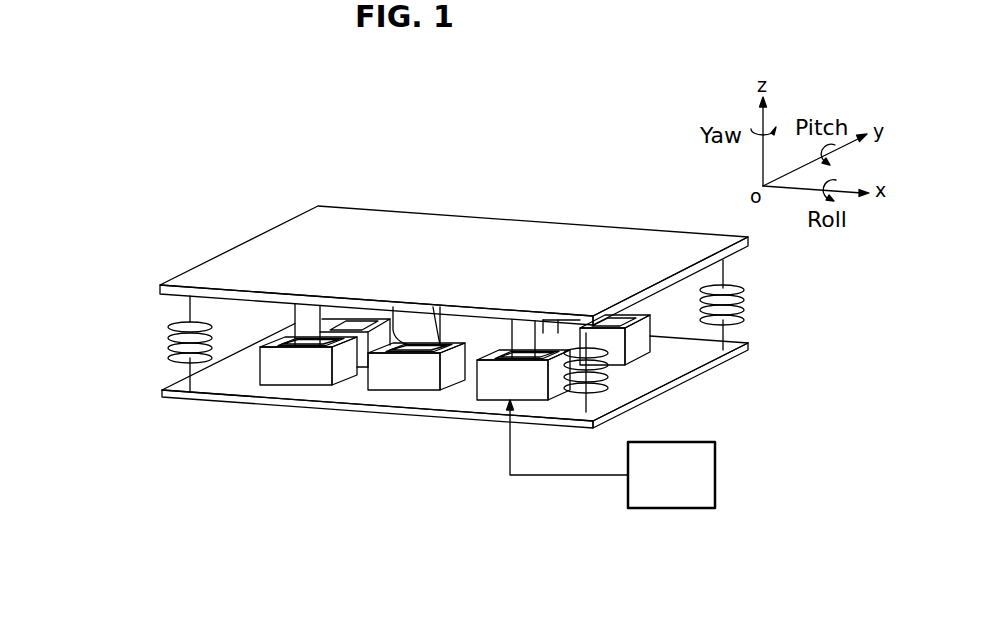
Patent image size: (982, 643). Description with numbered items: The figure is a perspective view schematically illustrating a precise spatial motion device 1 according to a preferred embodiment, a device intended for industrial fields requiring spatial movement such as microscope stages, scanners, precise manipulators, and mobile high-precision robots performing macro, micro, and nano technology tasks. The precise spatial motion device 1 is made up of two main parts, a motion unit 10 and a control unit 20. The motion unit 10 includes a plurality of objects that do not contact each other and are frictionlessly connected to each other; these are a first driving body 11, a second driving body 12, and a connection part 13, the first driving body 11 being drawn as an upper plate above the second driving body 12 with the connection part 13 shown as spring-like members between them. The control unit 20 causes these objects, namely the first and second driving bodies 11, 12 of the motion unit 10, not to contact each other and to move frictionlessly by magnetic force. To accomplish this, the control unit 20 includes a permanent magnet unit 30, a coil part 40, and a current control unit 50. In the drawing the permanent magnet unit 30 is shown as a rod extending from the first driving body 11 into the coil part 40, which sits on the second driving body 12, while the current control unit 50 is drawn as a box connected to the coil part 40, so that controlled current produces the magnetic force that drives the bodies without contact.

The precise spatial motion device 1 is at (440, 126).
The motion unit 10 is at (100, 213).
The first driving body 11 is at (194, 252).
The second driving body 12 is at (199, 408).
The connection part 13 is at (156, 338).
The control unit 20 is at (233, 550).
The permanent magnet unit 30 is at (286, 318).
The coil part 40 is at (349, 392).
The current control unit 50 is at (655, 509).